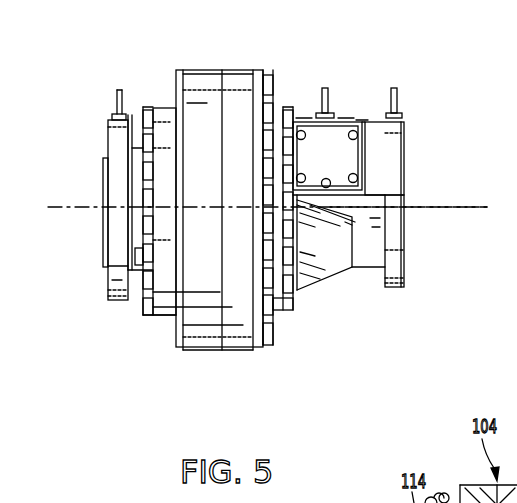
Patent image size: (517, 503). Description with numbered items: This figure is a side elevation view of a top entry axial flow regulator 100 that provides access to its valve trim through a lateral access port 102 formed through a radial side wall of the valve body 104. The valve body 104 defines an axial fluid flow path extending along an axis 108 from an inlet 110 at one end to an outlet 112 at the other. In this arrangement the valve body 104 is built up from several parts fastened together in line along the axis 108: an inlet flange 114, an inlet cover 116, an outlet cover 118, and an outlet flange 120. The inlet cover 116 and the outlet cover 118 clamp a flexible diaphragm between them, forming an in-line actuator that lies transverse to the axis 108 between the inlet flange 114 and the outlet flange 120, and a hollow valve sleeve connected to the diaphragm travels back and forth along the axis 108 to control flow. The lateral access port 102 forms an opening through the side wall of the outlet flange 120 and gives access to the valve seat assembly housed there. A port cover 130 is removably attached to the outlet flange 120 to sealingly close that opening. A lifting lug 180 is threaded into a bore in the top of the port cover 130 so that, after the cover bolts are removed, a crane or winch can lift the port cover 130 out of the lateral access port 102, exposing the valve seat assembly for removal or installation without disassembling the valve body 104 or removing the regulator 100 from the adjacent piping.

The top entry axial flow regulator 100 is at (322, 63).
The lateral access port 102 is at (361, 118).
The valve body 104 is at (222, 70).
The axis 108 is at (462, 205).
The inlet 110 is at (105, 236).
The outlet 112 is at (405, 230).
The inlet flange 114 is at (118, 301).
The inlet cover 116 is at (210, 351).
The outlet cover 118 is at (237, 351).
The outlet flange 120 is at (338, 266).
The port cover 130 is at (332, 132).
The lifting lug 180 is at (316, 108).